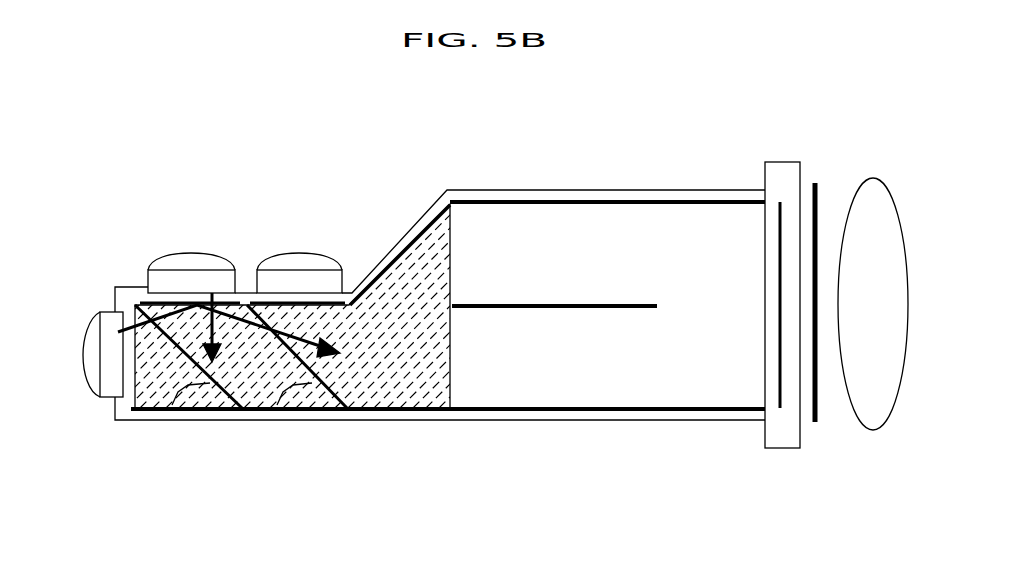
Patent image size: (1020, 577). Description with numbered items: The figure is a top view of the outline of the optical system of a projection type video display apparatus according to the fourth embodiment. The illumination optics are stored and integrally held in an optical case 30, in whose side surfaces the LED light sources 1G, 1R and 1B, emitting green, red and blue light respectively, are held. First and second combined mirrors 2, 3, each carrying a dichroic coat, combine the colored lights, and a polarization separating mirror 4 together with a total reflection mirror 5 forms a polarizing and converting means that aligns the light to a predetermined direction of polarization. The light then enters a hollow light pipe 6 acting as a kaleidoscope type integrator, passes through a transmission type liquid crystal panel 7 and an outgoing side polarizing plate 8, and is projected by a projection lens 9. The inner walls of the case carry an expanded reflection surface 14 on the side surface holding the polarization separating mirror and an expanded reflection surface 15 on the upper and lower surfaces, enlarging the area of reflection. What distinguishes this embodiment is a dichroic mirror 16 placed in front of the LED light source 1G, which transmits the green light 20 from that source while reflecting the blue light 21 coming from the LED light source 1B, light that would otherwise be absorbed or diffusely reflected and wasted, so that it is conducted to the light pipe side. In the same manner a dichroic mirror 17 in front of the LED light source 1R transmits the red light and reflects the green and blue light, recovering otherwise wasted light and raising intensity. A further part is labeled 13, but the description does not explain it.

The LED light source 1G is at (175, 260).
The LED light source 1R is at (297, 260).
The LED light source 1B is at (93, 377).
The first combined mirror 2 is at (167, 420).
The second combined mirror 3 is at (276, 413).
The polarization separating mirror 4 is at (412, 328).
The total reflection mirror 5 is at (443, 197).
The light pipe 6 is at (585, 413).
The transmission type liquid crystal panel 7 is at (775, 427).
The outgoing side polarizing plate 8 is at (817, 425).
The projection lens 9 is at (870, 402).
The reflecting plate 13 is at (525, 310).
The expanded reflection surface 14 is at (215, 410).
The expanded reflection surface 15 is at (365, 343).
The dichroic mirror 16 is at (148, 303).
The dichroic mirror 17 is at (257, 303).
The light 20 is at (210, 303).
The light 21 is at (130, 315).
The optical case 30 is at (465, 188).